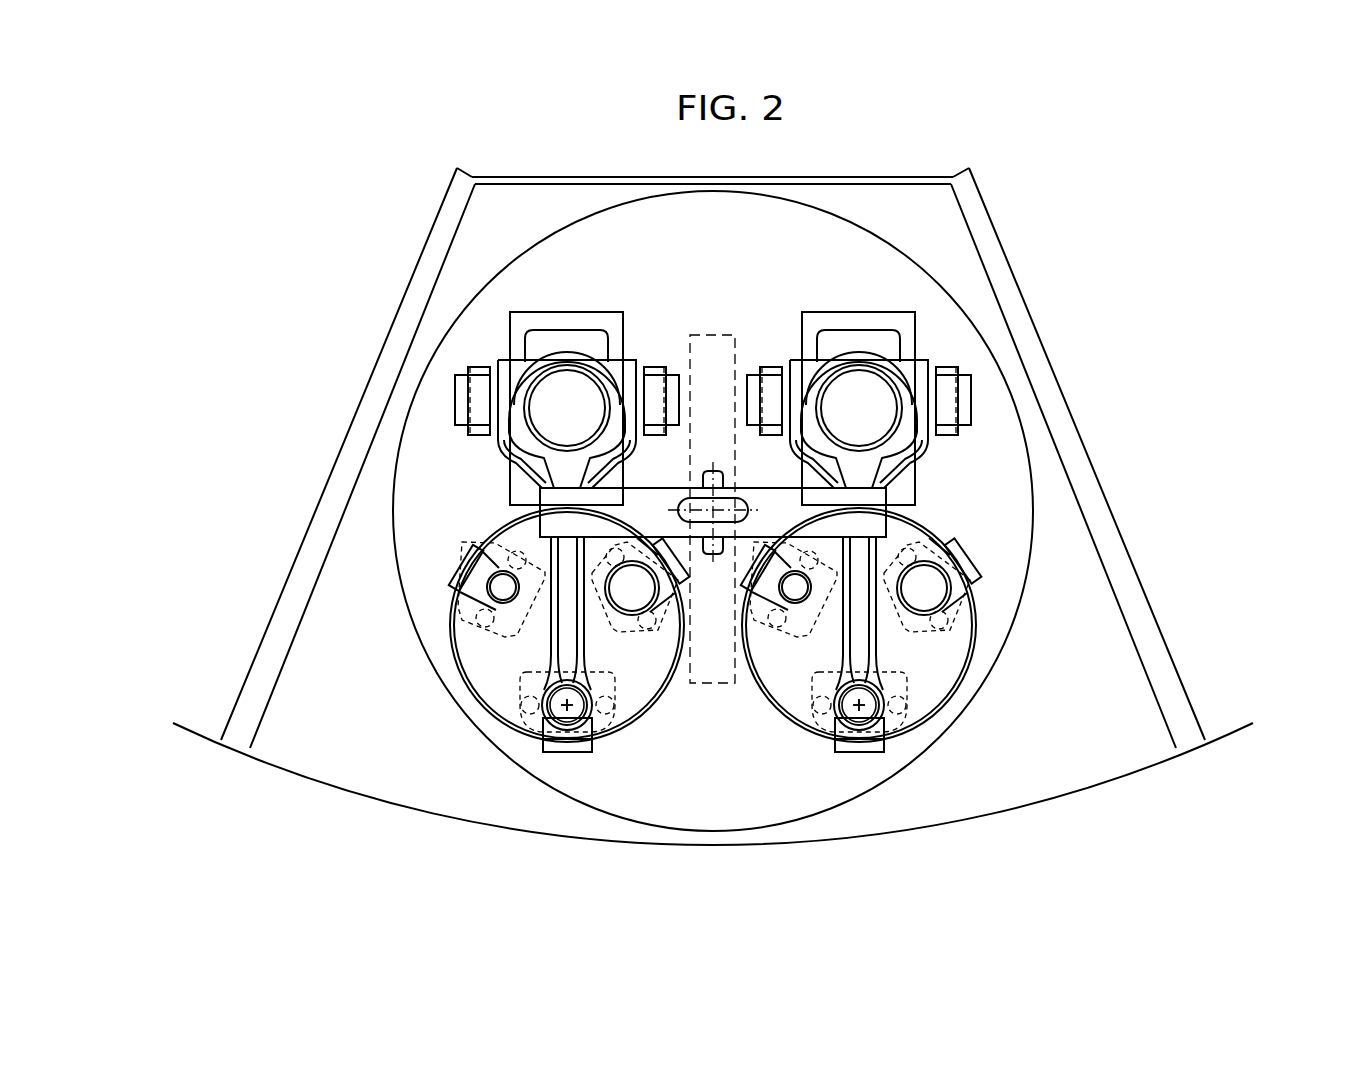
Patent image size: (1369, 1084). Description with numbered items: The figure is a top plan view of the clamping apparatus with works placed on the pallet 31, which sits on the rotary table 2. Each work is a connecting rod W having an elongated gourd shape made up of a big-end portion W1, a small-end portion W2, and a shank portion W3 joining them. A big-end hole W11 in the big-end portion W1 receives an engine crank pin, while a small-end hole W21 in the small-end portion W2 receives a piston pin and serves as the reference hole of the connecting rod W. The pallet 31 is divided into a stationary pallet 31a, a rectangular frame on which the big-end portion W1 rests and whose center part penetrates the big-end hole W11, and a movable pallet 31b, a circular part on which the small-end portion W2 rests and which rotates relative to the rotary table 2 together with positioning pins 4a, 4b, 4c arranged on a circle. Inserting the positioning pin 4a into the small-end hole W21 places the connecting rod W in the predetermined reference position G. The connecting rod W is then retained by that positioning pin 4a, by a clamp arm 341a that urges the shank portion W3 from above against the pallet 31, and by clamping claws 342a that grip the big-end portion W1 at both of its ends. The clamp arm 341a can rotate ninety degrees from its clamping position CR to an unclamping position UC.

The rotary table 2 is at (410, 812).
The pallet 31 is at (378, 486).
The stationary pallet 31a is at (510, 343).
The movable pallet 31b is at (483, 543).
The clamp arm 341a is at (662, 500).
The clamping claws 342a is at (970, 387).
The positioning pin 4a is at (552, 710).
The positioning pin 4b is at (758, 677).
The positioning pin 4c is at (962, 555).
The connecting rod W is at (1044, 567).
The big-end portion W1 is at (1048, 355).
The big-end hole W11 is at (843, 392).
The small-end portion W2 is at (1029, 795).
The small-end hole W21 is at (858, 704).
The shank portion W3 is at (877, 592).
The clamping position CR is at (567, 530).
The unclamping position UC is at (725, 320).
The reference position G is at (567, 705).